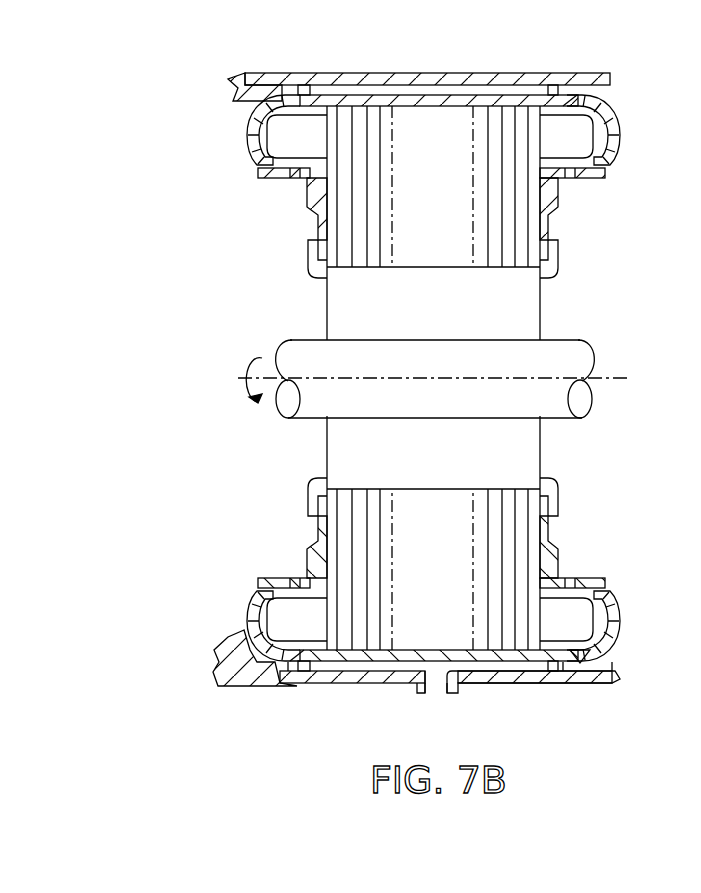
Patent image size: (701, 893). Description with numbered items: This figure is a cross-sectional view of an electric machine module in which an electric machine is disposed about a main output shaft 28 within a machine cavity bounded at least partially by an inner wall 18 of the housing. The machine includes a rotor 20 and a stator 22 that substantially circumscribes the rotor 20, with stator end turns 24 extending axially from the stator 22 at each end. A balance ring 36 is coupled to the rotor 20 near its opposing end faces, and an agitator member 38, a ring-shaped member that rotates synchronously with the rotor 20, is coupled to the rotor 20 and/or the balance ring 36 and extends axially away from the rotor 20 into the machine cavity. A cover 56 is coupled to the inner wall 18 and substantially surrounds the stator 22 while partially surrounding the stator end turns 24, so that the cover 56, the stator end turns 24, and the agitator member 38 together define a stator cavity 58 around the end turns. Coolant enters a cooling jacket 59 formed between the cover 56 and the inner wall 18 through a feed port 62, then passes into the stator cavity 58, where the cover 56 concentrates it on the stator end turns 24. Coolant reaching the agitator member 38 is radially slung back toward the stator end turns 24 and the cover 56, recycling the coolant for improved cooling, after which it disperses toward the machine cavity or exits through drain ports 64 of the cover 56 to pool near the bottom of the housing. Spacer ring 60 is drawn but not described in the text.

The inner wall 18 is at (477, 92).
The rotor 20 is at (522, 260).
The stator 22 is at (542, 182).
The stator end turns 24 is at (583, 143).
The main output shaft 28 is at (582, 352).
The balance ring 36 is at (318, 203).
The agitator member 38 is at (265, 182).
The cover 56 is at (417, 101).
The stator cavity 58 is at (598, 115).
The cooling jacket 59 is at (348, 92).
The spacer ring 60 is at (303, 95).
The feed port 62 is at (437, 688).
The drain ports 64 is at (613, 628).